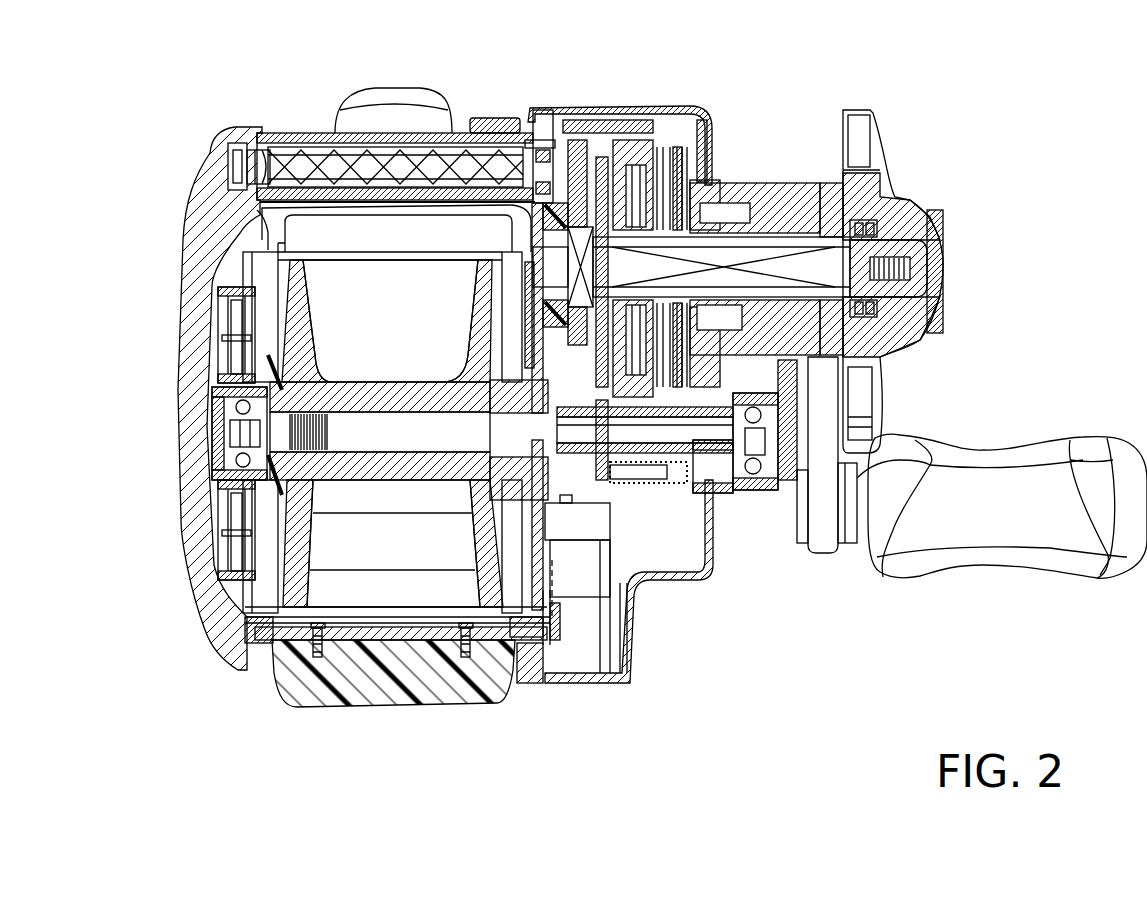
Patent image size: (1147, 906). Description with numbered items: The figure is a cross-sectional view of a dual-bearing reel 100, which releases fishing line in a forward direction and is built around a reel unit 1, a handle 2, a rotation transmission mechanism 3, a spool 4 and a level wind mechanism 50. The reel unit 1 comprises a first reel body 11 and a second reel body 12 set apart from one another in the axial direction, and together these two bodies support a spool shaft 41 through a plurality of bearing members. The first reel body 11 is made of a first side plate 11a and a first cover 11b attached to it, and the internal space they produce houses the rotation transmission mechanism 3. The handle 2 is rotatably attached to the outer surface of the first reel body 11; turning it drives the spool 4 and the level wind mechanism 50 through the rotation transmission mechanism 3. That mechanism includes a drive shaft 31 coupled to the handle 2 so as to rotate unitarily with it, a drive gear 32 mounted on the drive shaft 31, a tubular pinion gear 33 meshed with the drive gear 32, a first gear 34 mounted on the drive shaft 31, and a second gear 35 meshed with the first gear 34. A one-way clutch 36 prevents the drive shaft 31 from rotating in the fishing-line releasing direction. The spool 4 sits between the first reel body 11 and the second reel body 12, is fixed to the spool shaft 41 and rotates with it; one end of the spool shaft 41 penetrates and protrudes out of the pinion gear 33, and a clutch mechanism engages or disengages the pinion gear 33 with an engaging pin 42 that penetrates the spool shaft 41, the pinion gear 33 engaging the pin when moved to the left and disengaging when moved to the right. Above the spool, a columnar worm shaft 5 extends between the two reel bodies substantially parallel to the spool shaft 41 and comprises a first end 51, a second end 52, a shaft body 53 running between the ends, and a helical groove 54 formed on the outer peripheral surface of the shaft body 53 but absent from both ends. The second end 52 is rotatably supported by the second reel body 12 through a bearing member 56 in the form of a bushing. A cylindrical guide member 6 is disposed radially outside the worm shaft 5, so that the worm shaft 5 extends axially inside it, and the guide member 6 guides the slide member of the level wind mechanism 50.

The dual-bearing reel 100 is at (1002, 118).
The reel unit 1 is at (695, 77).
The handle 2 is at (830, 556).
The rotation transmission mechanism 3 is at (637, 118).
The spool 4 is at (372, 490).
The worm shaft 5 is at (326, 150).
The guide member 6 is at (455, 120).
The first reel body 11 is at (586, 693).
The first side plate 11a is at (546, 683).
The first cover 11b is at (625, 685).
The second reel body 12 is at (238, 680).
The drive shaft 31 is at (773, 247).
The drive gear 32 is at (646, 140).
The pinion gear 33 is at (657, 465).
The first gear 34 is at (605, 150).
The second gear 35 is at (574, 230).
The one-way clutch 36 is at (722, 200).
The spool shaft 41 is at (400, 440).
The engaging pin 42 is at (517, 615).
The level wind mechanism 50 is at (303, 118).
The first end 51 is at (545, 158).
The second end 52 is at (242, 140).
The shaft body 53 is at (390, 120).
The helical groove 54 is at (288, 142).
The bearing member 56 is at (257, 210).